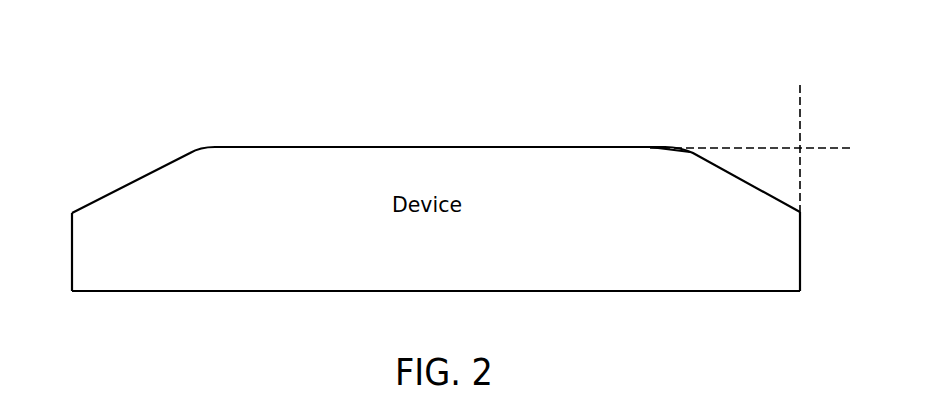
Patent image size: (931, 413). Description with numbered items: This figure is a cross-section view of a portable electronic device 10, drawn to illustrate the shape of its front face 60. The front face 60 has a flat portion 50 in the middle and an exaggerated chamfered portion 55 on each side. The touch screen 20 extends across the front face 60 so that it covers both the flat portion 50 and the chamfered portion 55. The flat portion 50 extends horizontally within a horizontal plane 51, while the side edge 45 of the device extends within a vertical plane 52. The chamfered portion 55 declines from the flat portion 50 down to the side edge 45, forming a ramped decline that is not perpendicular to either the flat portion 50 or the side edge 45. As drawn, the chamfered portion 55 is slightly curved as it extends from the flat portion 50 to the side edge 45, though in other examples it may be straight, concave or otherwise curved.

The portable electronic device 10 is at (116, 136).
The touch screen 20 is at (281, 146).
The side edge 45 is at (71, 263).
The flat portion 50 is at (612, 139).
The horizontal plane 51 is at (832, 152).
The vertical plane 52 is at (801, 113).
The chamfered portion 55 is at (96, 172).
The front face 60 is at (754, 62).